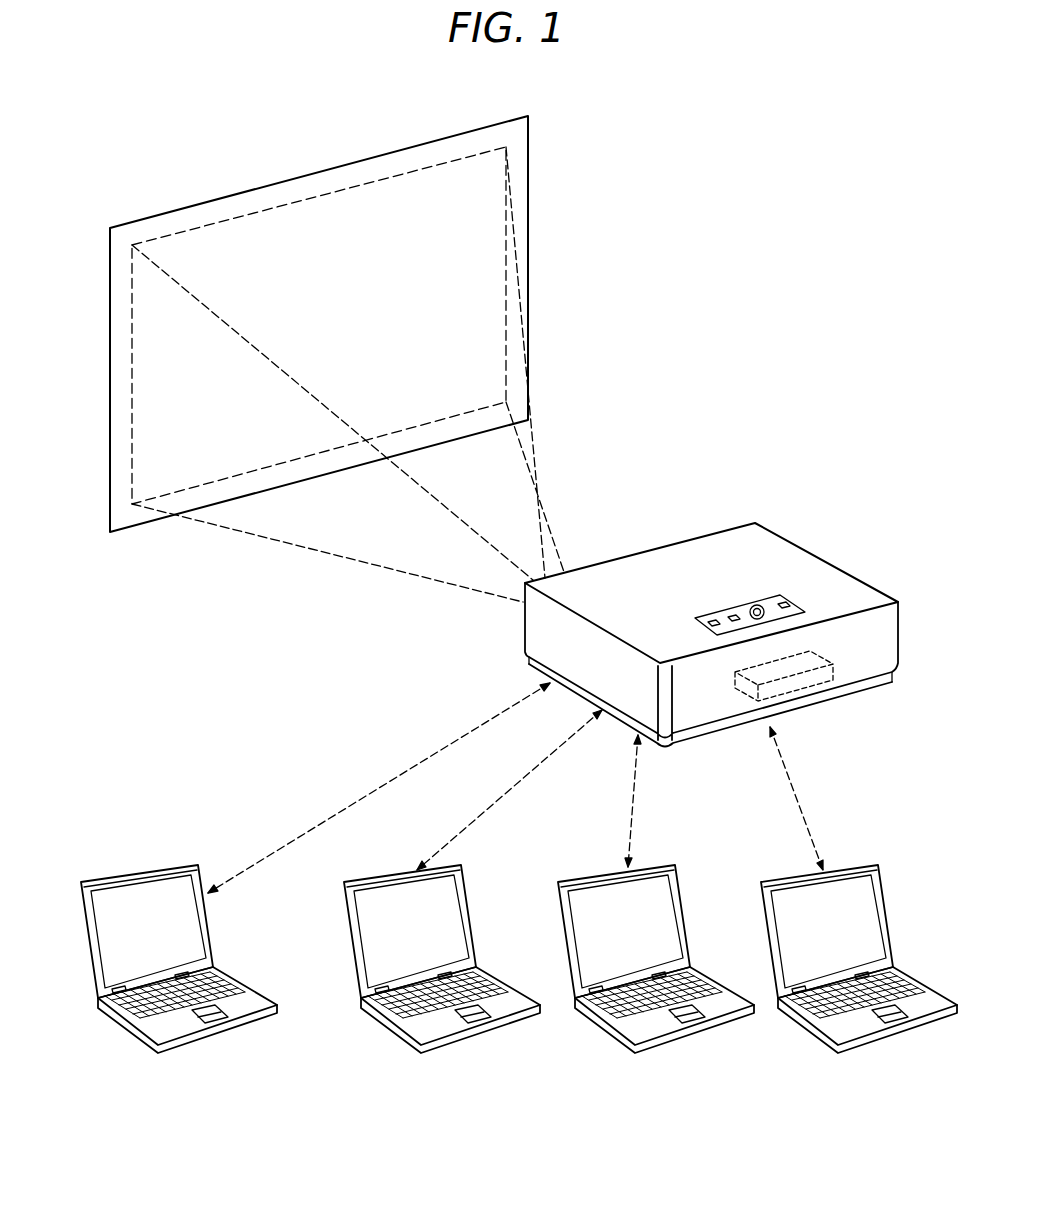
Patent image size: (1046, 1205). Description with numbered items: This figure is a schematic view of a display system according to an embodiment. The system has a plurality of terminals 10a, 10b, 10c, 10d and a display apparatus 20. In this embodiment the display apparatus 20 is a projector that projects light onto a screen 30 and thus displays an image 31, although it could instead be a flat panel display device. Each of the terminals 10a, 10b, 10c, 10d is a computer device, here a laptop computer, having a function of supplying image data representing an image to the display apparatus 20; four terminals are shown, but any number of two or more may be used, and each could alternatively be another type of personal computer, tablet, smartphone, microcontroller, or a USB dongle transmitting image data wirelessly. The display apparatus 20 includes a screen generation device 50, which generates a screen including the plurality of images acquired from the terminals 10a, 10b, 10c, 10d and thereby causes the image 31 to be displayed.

The terminal 10a is at (238, 1031).
The terminal 10b is at (501, 1031).
The terminal 10c is at (715, 1031).
The terminal 10d is at (918, 1031).
The display apparatus 20 is at (812, 572).
The screen 30 is at (118, 321).
The image 31 is at (378, 178).
The screen generation device 50 is at (830, 705).